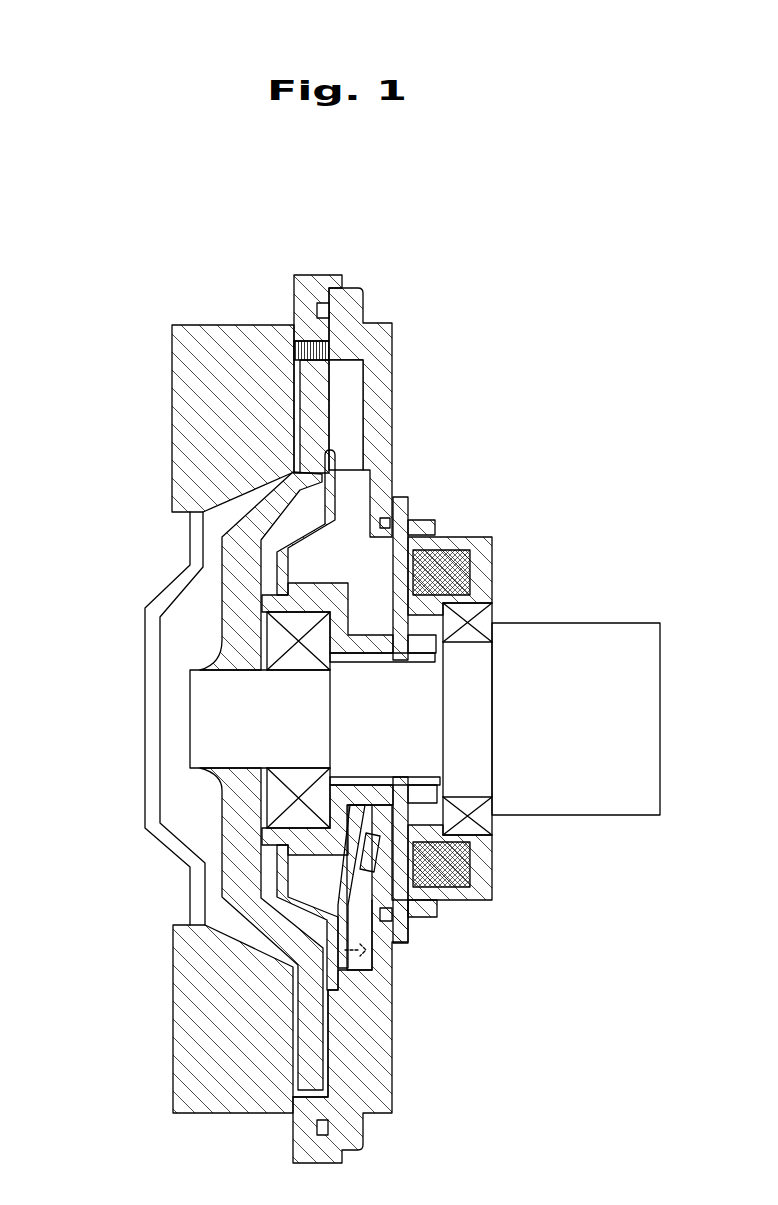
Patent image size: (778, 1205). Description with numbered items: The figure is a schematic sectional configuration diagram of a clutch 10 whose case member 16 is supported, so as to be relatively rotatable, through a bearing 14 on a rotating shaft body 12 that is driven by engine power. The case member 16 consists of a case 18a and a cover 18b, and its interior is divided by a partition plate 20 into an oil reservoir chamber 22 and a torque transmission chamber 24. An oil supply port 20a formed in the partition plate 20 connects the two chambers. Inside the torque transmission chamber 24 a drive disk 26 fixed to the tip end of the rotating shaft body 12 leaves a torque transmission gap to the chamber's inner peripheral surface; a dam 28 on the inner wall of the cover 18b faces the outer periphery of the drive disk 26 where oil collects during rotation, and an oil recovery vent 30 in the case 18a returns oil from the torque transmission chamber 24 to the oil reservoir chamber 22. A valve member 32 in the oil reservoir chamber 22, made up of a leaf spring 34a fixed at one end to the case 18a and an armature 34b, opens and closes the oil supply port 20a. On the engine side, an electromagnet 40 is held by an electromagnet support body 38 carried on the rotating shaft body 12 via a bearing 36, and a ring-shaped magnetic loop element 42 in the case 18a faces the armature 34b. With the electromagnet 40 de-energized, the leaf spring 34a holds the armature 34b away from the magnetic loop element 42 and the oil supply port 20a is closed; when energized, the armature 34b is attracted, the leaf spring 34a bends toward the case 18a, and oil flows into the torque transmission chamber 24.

The clutch 10 is at (487, 200).
The rotating shaft body 12 is at (597, 650).
The bearing 14 is at (273, 642).
The case member 16 is at (343, 288).
The case 18a is at (388, 403).
The cover 18b is at (172, 392).
The partition plate 20 is at (338, 508).
The oil supply port 20a is at (323, 948).
The oil reservoir chamber 22 is at (307, 568).
The torque transmission chamber 24 is at (297, 1060).
The drive disk 26 is at (295, 370).
The dam 28 is at (300, 342).
The oil recovery vent 30 is at (365, 383).
The valve member 32 is at (395, 962).
The leaf spring 34a is at (343, 880).
The armature 34b is at (408, 925).
The bearing 36 is at (495, 820).
The electromagnet support body 38 is at (495, 873).
The electromagnet 40 is at (470, 573).
The magnetic loop element 42 is at (420, 520).